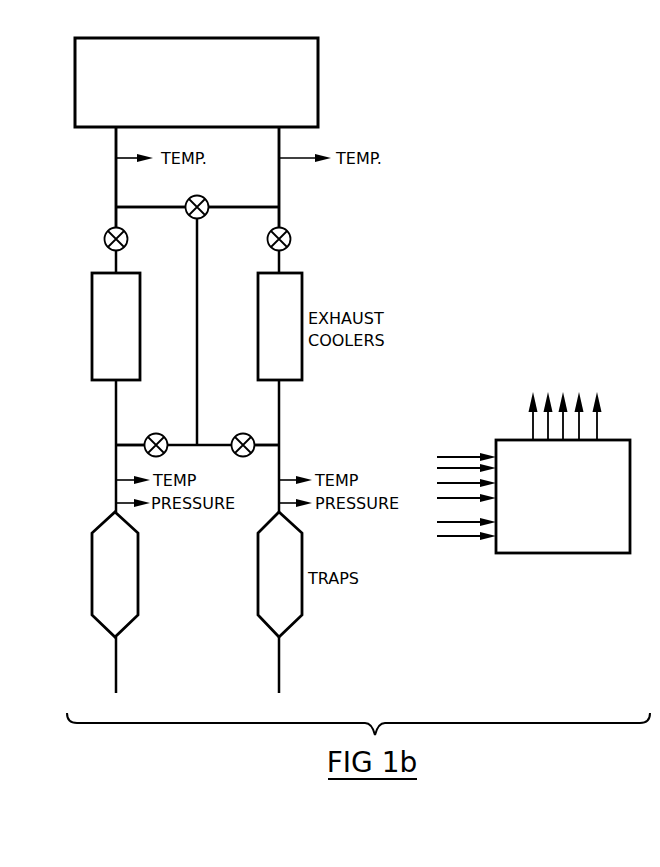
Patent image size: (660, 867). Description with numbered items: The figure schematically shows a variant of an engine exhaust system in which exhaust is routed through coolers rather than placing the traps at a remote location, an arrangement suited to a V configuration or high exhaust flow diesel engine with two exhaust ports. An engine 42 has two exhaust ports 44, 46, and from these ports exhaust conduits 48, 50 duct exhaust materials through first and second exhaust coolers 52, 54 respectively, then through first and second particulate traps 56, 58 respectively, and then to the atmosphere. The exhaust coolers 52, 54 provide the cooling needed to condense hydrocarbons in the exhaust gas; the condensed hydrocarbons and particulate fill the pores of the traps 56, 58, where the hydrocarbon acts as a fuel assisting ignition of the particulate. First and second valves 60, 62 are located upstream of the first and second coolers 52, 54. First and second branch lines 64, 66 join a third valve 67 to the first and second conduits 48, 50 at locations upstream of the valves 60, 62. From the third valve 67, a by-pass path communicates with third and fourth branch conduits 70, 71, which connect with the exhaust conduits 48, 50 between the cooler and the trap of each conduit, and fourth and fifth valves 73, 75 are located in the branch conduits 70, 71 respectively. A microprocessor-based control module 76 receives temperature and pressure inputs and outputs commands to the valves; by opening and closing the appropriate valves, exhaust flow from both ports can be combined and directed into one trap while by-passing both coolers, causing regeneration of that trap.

The engine 42 is at (320, 86).
The exhaust port 44 is at (284, 130).
The exhaust port 46 is at (115, 130).
The exhaust conduit 48 is at (284, 183).
The exhaust conduit 50 is at (115, 183).
The exhaust cooler 52 is at (304, 295).
The exhaust cooler 54 is at (90, 308).
The particulate trap 56 is at (303, 552).
The particulate trap 58 is at (140, 567).
The first valve 60 is at (291, 240).
The second valve 62 is at (104, 238).
The first branch line 64 is at (240, 203).
The second branch line 66 is at (156, 205).
The third valve 67 is at (192, 217).
The third branch conduit 70 is at (270, 442).
The fourth branch conduit 71 is at (128, 443).
The fourth valve 73 is at (237, 436).
The fifth valve 75 is at (157, 436).
The control module 76 is at (553, 545).